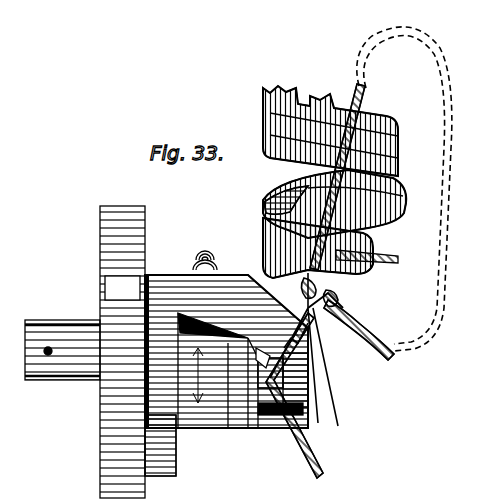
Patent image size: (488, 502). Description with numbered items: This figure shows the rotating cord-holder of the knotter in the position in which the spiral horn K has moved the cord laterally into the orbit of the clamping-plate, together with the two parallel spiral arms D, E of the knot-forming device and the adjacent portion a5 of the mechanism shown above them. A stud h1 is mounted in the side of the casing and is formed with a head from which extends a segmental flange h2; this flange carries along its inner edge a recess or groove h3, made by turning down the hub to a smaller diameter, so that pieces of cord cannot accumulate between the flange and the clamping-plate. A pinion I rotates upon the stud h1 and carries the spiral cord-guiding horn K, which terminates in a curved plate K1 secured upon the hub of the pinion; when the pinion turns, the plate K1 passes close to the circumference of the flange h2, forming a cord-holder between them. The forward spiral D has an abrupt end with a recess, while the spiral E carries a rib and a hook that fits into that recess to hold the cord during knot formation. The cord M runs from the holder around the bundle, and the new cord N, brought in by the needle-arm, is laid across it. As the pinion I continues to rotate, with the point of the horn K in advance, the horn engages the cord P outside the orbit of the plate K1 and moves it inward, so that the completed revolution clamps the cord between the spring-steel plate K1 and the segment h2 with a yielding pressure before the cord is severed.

The stud h1 is at (62, 336).
The pinion I is at (138, 352).
The recess or groove h3 is at (238, 420).
The segmental flange h2 is at (263, 420).
The upper drum a5 is at (307, 92).
The spiral arm E is at (256, 208).
The forward spiral D is at (257, 240).
The cord M is at (356, 90).
The spiral cord-guiding horn K is at (326, 364).
The curved plate K1 is at (282, 341).
The new cord N is at (359, 330).
The cord P is at (314, 466).